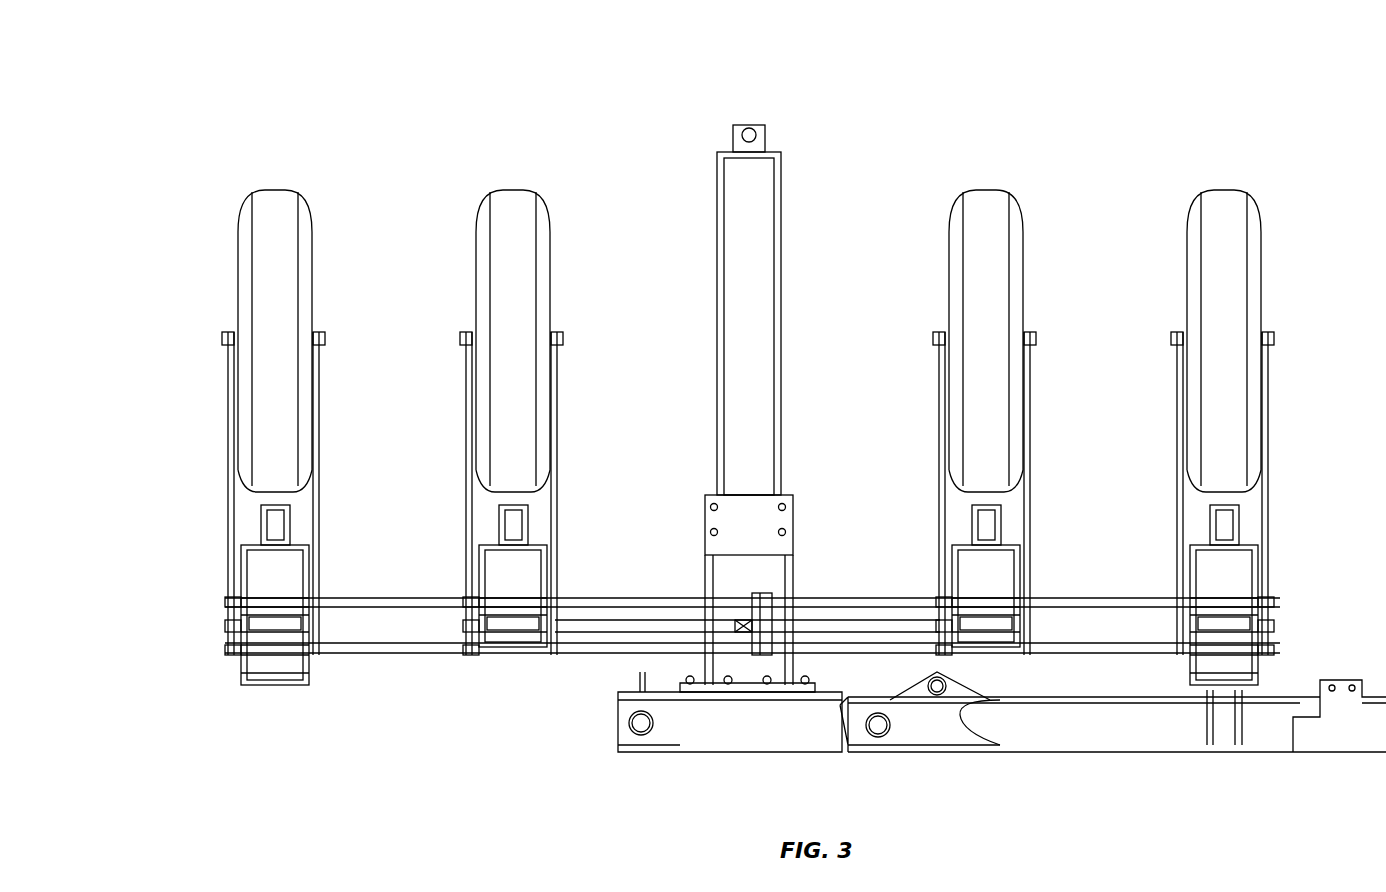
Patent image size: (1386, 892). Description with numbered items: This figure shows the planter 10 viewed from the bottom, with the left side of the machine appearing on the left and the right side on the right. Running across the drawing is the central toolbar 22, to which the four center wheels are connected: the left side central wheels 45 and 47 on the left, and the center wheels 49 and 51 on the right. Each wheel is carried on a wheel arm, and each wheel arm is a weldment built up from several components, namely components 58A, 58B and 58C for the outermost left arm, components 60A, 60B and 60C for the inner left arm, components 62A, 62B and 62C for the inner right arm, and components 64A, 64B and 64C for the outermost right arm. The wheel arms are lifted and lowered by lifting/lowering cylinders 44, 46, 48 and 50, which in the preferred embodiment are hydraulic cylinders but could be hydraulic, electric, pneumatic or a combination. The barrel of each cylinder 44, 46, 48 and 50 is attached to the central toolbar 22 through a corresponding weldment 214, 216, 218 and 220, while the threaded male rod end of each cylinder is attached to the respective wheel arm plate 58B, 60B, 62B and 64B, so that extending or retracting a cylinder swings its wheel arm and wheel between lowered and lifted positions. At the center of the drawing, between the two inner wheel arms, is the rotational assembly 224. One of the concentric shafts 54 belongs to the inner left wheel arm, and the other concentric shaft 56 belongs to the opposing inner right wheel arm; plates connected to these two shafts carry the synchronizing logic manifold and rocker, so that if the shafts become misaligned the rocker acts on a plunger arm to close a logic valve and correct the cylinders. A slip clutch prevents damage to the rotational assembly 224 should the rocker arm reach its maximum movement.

The planter 10 is at (860, 76).
The central toolbar 22 is at (430, 625).
The lifting/lowering cylinder 44 is at (277, 552).
The left side central wheel 45 is at (272, 208).
The lifting/lowering cylinder 46 is at (512, 553).
The left side central wheel 47 is at (513, 207).
The lifting/lowering cylinder 48 is at (987, 553).
The center wheel 49 is at (988, 207).
The lifting/lowering cylinder 50 is at (1225, 553).
The center wheel 51 is at (1218, 207).
The concentric shaft 54 is at (595, 627).
The concentric shaft 56 is at (888, 627).
The wheel arm component 58A is at (232, 453).
The wheel arm plate 58B is at (302, 528).
The wheel arm component 58C is at (318, 365).
The wheel arm component 60A is at (470, 460).
The wheel arm plate 60B is at (545, 528).
The wheel arm component 60C is at (557, 370).
The wheel arm component 62A is at (945, 460).
The wheel arm plate 62B is at (1020, 528).
The wheel arm component 62C is at (1033, 365).
The wheel arm component 64A is at (1185, 460).
The wheel arm plate 64B is at (1262, 528).
The wheel arm component 64C is at (1272, 362).
The weldment 214 is at (277, 623).
The weldment 216 is at (518, 623).
The weldment 218 is at (990, 627).
The weldment 220 is at (1228, 625).
The rotational assembly 224 is at (757, 605).